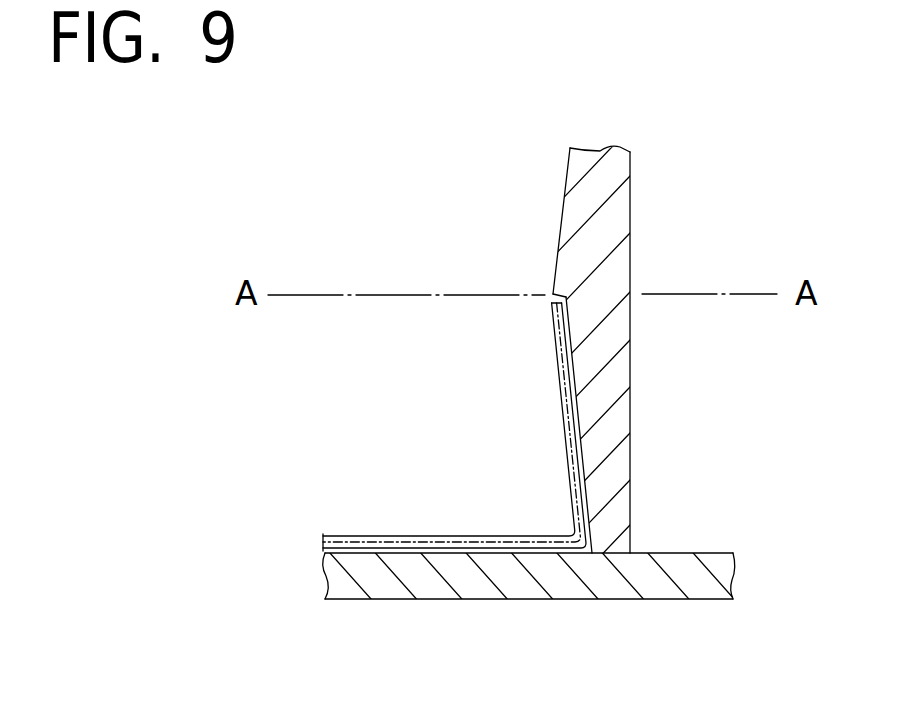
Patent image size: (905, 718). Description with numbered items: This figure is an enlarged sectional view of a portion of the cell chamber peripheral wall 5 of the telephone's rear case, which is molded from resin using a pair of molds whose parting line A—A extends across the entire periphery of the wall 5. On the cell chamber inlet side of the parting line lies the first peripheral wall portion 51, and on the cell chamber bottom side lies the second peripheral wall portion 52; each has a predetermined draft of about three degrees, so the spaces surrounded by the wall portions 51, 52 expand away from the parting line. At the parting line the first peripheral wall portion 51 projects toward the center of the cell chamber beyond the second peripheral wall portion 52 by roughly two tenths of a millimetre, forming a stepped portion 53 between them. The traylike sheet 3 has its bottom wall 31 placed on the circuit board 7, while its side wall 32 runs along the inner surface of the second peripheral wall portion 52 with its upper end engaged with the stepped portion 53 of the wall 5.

The traylike sheet 3 is at (449, 427).
The bottom wall 31 is at (353, 537).
The side wall 32 is at (560, 409).
The cell chamber peripheral wall 5 is at (547, 369).
The first peripheral wall portion 51 is at (571, 202).
The second peripheral wall portion 52 is at (592, 458).
The stepped portion 53 is at (540, 302).
The circuit board 7 is at (509, 590).